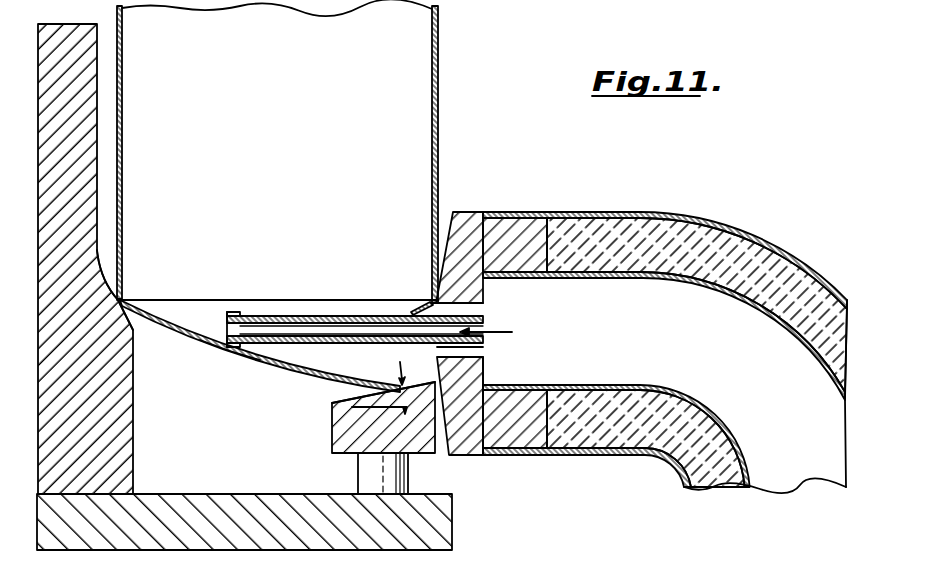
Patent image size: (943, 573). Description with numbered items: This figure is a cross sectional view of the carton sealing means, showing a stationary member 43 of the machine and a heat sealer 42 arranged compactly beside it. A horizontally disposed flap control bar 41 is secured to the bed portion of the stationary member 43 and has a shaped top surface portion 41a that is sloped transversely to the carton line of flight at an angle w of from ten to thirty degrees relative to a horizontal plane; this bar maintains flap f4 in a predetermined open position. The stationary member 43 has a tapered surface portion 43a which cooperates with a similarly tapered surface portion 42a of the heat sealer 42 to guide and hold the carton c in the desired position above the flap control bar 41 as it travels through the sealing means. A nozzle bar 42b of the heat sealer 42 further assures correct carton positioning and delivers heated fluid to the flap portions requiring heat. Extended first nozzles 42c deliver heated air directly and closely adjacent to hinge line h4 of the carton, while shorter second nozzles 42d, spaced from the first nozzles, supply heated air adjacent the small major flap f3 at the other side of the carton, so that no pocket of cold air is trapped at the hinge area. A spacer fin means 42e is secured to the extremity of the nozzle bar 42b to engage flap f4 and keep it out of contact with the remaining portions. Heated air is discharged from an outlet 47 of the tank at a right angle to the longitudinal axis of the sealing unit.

The stationary member 43 is at (63, 32).
The tapered surface portion 43a is at (100, 270).
The hinge line h4 is at (113, 303).
The container c is at (286, 120).
The flap f4 is at (208, 347).
The spacer fin means 42e is at (230, 352).
The flap control bar 41 is at (337, 436).
The top surface portion 41a is at (372, 390).
The angle w is at (381, 424).
The nozzle bar 42b is at (290, 316).
The first nozzles 42c is at (340, 334).
The small major flap f3 is at (414, 300).
The tapered surface portion 42a is at (444, 222).
The second nozzles 42d is at (483, 306).
The heat sealer 42 is at (641, 336).
The outlet 47 is at (797, 473).